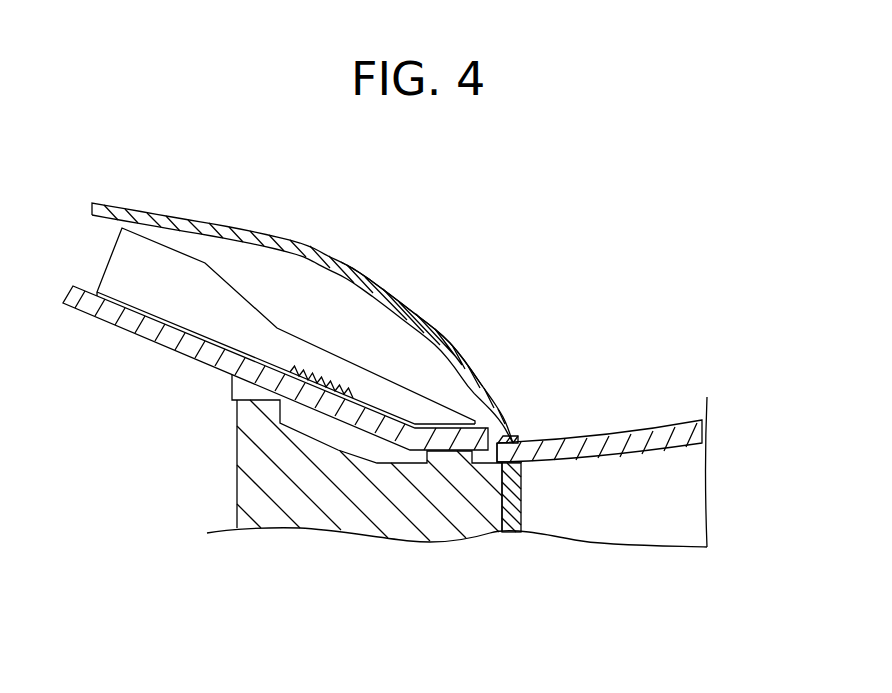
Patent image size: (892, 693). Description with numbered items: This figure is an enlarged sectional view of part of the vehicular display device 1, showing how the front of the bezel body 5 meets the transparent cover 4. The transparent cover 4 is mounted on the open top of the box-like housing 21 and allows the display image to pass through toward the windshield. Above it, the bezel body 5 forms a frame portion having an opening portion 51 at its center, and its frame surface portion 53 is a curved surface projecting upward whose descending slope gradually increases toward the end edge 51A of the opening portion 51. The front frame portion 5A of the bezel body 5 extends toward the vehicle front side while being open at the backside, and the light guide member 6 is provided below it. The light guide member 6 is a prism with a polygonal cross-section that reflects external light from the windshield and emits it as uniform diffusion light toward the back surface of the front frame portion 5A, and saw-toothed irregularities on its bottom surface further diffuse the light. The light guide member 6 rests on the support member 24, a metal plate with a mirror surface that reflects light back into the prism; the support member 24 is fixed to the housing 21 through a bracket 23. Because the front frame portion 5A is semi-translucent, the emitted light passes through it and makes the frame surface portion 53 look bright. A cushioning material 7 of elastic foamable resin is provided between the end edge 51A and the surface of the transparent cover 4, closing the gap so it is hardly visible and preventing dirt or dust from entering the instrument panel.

The vehicular display device 1 is at (437, 237).
The transparent cover 4 is at (662, 427).
The bezel body 5 is at (263, 232).
The front frame portion 5A is at (308, 258).
The light guide member 6 is at (207, 263).
The cushioning material 7 is at (517, 443).
The housing 21 is at (510, 513).
The bracket 23 is at (237, 437).
The support member 24 is at (199, 365).
The opening portion 51 is at (597, 400).
The end edge 51A is at (513, 440).
The frame surface portion 53 is at (363, 274).